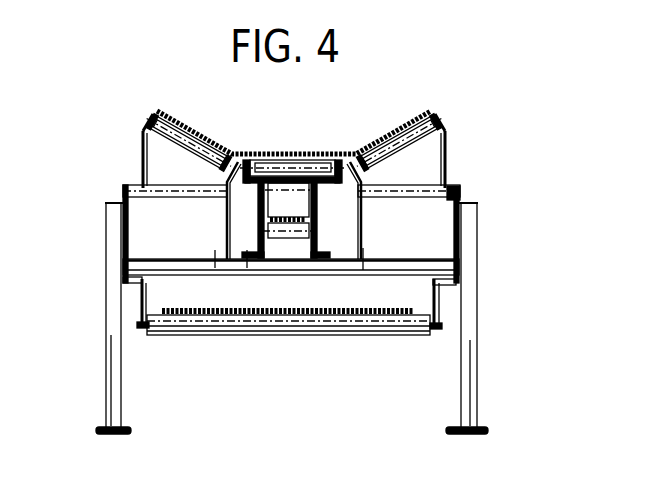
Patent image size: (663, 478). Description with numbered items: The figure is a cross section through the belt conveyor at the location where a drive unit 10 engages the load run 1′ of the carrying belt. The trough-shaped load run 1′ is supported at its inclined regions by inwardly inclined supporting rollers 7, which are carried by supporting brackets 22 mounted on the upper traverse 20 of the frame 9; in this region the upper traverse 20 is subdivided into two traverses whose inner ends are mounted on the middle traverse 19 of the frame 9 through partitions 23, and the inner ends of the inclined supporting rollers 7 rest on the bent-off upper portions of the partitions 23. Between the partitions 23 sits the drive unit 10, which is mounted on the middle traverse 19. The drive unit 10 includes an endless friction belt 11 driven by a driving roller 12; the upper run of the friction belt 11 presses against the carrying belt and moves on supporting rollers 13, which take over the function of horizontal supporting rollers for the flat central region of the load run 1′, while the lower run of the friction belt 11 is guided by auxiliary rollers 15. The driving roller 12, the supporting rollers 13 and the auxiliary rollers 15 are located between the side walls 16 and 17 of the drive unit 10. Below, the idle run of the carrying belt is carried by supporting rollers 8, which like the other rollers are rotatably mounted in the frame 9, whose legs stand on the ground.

The load run 1′ is at (343, 143).
The inwardly inclined supporting rollers 7 is at (425, 118).
The supporting rollers 8 is at (219, 322).
The frame 9 is at (466, 293).
The drive unit 10 is at (344, 212).
The endless friction belt 11 is at (281, 158).
The driving roller 12 is at (280, 196).
The supporting rollers 13 is at (259, 163).
The auxiliary rollers 15 is at (294, 240).
The side wall 16 is at (267, 226).
The side wall 17 is at (320, 208).
The middle traverse 19 is at (424, 266).
The upper traverse 20 is at (427, 185).
The supporting brackets 22 is at (142, 152).
The partitions 23 is at (224, 175).